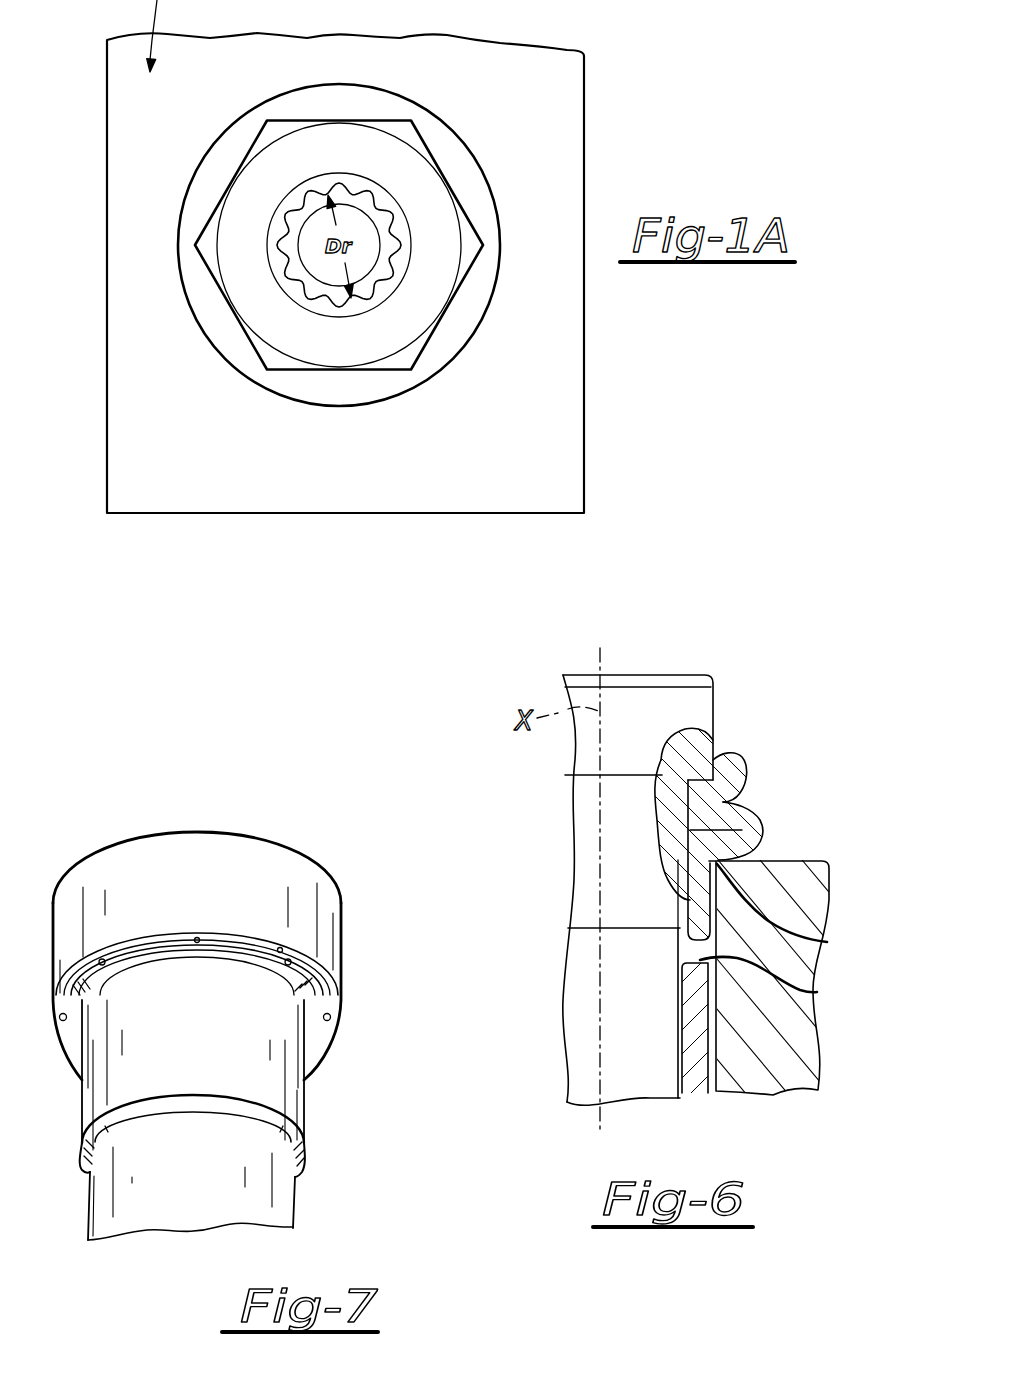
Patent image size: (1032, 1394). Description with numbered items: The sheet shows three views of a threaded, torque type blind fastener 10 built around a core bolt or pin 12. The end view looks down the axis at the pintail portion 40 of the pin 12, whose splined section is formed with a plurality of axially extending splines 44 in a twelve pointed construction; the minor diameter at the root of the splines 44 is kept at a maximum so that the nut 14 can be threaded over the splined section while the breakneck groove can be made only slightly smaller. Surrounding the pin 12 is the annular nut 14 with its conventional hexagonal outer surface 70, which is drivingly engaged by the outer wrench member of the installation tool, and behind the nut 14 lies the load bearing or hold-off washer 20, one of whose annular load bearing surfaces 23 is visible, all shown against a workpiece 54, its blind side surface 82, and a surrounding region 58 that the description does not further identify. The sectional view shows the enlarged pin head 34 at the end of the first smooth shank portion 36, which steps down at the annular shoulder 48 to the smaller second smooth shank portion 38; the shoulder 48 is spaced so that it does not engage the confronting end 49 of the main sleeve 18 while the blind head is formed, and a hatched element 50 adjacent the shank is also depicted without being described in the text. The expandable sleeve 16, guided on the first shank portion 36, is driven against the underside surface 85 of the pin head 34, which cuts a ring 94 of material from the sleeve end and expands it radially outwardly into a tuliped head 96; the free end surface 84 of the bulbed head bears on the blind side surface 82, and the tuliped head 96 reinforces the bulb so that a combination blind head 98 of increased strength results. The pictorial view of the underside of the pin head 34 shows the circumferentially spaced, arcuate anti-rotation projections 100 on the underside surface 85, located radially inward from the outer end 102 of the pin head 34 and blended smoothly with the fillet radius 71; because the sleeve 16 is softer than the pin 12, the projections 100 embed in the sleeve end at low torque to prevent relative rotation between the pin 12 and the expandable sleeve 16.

In FIG. 1A, the blind fastener 10 is at (230, 183).
In FIG. 6, the blind fastener 10 is at (733, 670).
In FIG. 1A, the pin 12 is at (378, 212).
In FIG. 6, the pin 12 is at (565, 850).
In FIG. 7, the pin 12 is at (52, 875).
In FIG. 1A, the nut 14 is at (202, 268).
In FIG. 6, the expandable sleeve 16 is at (690, 908).
In FIG. 6, the main sleeve 18 is at (683, 1098).
In FIG. 1A, the bearing washer 20 is at (488, 180).
In FIG. 1A, the annular load bearing surface 23 is at (243, 132).
In FIG. 6, the pin head 34 is at (660, 695).
In FIG. 7, the pin head 34 is at (152, 853).
In FIG. 6, the first smooth shank portion 36 is at (640, 858).
In FIG. 7, the first smooth shank portion 36 is at (207, 1043).
In FIG. 6, the second smooth shank portion 38 is at (651, 1045).
In FIG. 7, the second smooth shank portion 38 is at (208, 1196).
In FIG. 1A, the pintail portion 40 is at (412, 260).
In FIG. 1A, the splines 44 is at (300, 285).
In FIG. 6, the shoulder 48 is at (620, 932).
In FIG. 7, the shoulder 48 is at (305, 1163).
In FIG. 6, the confronting end of main sleeve 49 is at (815, 992).
In FIG. 6, the thread insert 50 is at (738, 1077).
In FIG. 6, the workpiece 54 is at (797, 902).
In FIG. 1A, the panel 58 is at (165, 488).
In FIG. 1A, the hexagonal outer surface 70 is at (393, 373).
In FIG. 7, the fillet radius 71 is at (244, 944).
In FIG. 6, the blind side surface 82 is at (807, 858).
In FIG. 6, the free end surface 84 is at (822, 943).
In FIG. 7, the underside surface 85 is at (280, 950).
In FIG. 6, the ring 94 is at (733, 810).
In FIG. 6, the tuliped head 96 is at (740, 750).
In FIG. 6, the combination blind head 98 is at (766, 780).
In FIG. 7, the projections 100 is at (195, 938).
In FIG. 7, the outer end of pin head 102 is at (338, 1035).